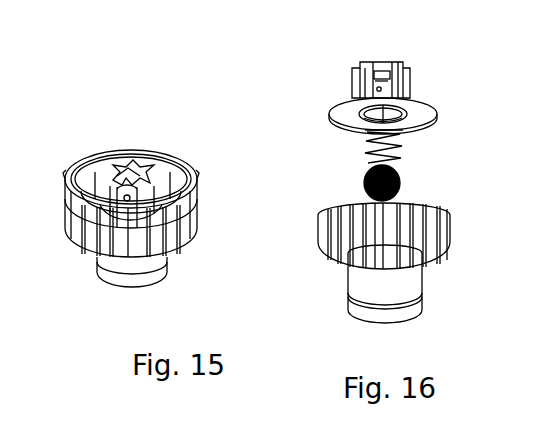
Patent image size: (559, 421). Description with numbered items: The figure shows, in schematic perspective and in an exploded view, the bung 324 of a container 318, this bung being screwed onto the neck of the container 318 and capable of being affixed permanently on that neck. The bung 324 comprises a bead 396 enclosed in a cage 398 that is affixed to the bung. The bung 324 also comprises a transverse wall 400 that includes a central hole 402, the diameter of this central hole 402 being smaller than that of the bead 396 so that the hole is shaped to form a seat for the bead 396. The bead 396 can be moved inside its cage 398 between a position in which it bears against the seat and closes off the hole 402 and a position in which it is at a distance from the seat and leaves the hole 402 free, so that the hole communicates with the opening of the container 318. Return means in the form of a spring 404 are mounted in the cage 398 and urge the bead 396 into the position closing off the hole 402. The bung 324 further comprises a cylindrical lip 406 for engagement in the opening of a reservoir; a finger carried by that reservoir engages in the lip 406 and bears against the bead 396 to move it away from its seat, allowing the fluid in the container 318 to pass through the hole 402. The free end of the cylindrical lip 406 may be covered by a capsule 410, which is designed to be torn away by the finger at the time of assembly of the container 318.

In FIG. 15, the container 318 is at (17, 86).
In FIG. 15, the bung 324 is at (174, 158).
In FIG. 16, the bung 324 is at (343, 284).
In FIG. 15, the bead 396 is at (120, 203).
In FIG. 16, the bead 396 is at (355, 183).
In FIG. 15, the cage 398 is at (124, 165).
In FIG. 16, the cage 398 is at (350, 66).
In FIG. 15, the transverse wall 400 is at (95, 200).
In FIG. 16, the transverse wall 400 is at (432, 116).
In FIG. 15, the central hole 402 is at (153, 212).
In FIG. 16, the spring 404 is at (355, 142).
In FIG. 16, the cylindrical lip 406 is at (414, 298).
In FIG. 16, the capsule 410 is at (356, 322).